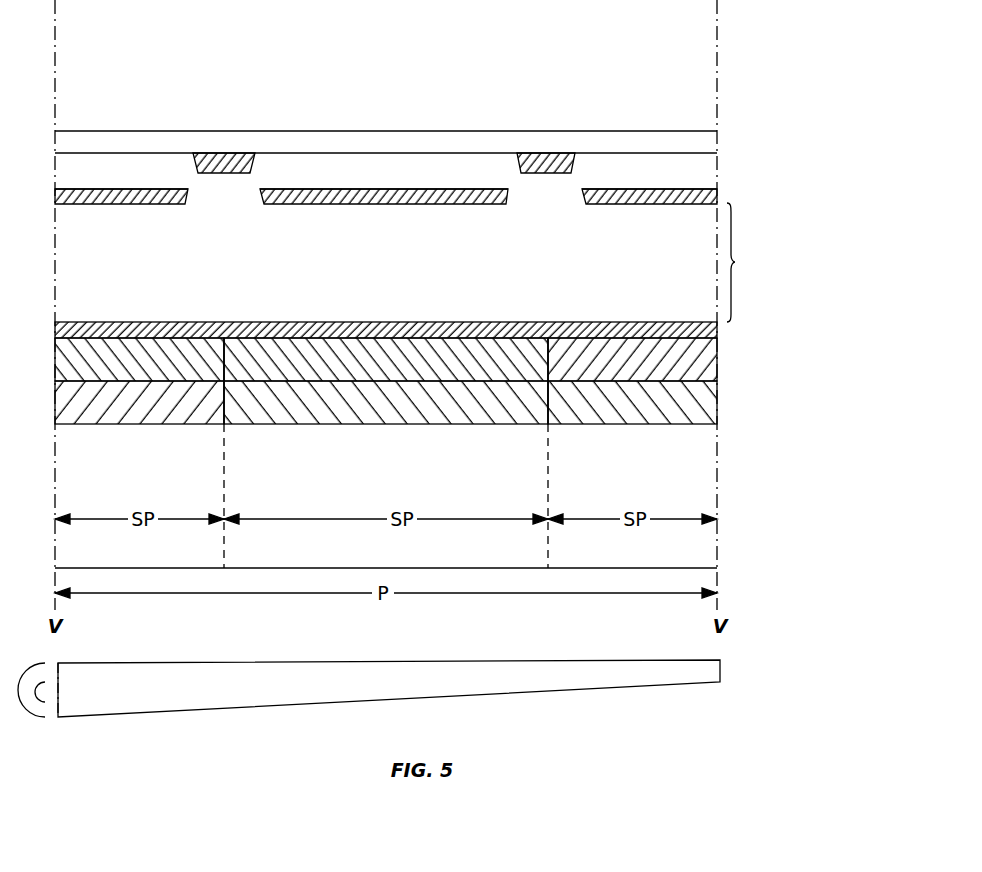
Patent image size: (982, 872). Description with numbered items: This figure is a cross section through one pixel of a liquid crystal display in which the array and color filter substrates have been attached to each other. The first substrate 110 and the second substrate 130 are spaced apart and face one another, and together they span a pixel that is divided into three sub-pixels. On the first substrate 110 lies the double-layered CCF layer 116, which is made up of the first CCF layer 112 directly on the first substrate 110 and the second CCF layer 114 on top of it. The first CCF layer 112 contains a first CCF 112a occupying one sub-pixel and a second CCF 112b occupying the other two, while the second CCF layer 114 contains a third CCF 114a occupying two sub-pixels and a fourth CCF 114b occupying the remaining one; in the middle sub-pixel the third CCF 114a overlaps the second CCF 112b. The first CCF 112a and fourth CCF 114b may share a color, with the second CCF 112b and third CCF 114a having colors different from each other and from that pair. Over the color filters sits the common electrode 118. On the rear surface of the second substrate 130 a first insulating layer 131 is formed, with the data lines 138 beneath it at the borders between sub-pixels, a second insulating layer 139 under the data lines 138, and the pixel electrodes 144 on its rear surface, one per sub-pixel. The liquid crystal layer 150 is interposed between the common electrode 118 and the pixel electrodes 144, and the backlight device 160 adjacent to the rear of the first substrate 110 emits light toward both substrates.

The first substrate 110 is at (440, 424).
The first CCF layer 112 is at (411, 429).
The first CCF 112a is at (150, 405).
The second CCF 112b is at (393, 405).
The second CCF layer 114 is at (411, 331).
The third CCF 114a is at (105, 363).
The fourth CCF 114b is at (682, 363).
The double-layered CCF layer 116 is at (440, 379).
The common electrode 118 is at (710, 330).
The second substrate 130 is at (440, 153).
The first insulating layer 131 is at (647, 142).
The data lines 138 is at (220, 157).
The second insulating layer 139 is at (707, 169).
The pixel electrodes 144 is at (177, 207).
The liquid crystal layer 150 is at (755, 262).
The backlight device 160 is at (723, 660).